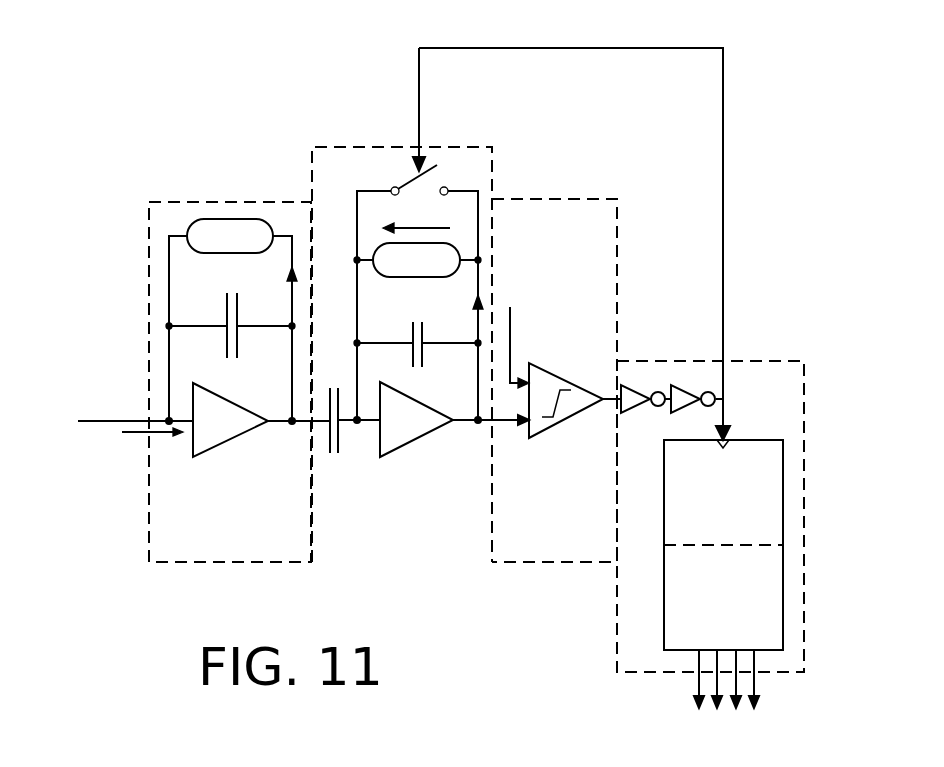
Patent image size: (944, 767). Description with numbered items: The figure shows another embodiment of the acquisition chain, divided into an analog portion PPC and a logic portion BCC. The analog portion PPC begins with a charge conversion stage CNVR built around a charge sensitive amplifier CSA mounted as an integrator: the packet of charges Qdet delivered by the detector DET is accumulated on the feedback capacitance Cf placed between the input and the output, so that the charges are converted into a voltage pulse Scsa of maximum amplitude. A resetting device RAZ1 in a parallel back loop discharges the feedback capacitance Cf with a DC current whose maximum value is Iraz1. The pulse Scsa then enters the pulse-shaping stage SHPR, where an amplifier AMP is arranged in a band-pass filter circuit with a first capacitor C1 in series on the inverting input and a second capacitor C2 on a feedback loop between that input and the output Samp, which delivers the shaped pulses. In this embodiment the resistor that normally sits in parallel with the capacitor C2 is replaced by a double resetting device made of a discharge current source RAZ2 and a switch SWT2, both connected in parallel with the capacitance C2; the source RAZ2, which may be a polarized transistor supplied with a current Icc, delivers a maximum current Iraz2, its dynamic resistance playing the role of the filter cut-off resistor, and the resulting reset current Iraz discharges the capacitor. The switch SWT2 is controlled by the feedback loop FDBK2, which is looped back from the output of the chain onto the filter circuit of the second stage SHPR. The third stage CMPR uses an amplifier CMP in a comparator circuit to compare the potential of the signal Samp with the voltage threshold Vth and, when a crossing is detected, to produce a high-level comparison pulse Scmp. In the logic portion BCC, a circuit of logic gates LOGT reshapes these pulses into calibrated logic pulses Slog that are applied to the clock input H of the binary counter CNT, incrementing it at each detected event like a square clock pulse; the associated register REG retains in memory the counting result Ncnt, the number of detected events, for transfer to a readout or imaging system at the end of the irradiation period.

The detector DET is at (98, 405).
The packet of charges Qdet is at (152, 445).
The charge conversion stage CNVR is at (230, 382).
The charge sensitive amplifier CSA is at (223, 422).
The output signal of the CSA amplifier Scsa is at (281, 435).
The resetting device RAZ1 is at (230, 320).
The maximum resetting current Iraz1 is at (263, 278).
The feedback capacitance Cf is at (237, 340).
The pulse-shaping stage SHPR is at (402, 354).
The first capacitor C1 is at (338, 435).
The amplifier AMP is at (405, 423).
The output signal of the AMP amplifier Samp is at (476, 436).
The switch SWT2 is at (413, 178).
The constant current Icc is at (459, 176).
The maximum current of the RAZ2 source Iraz2 is at (416, 218).
The discharge current source RAZ2 is at (417, 260).
The second capacitor C2 is at (422, 355).
The reset current Iraz is at (455, 301).
The threshold crossing detection stage CMPR is at (554, 380).
The voltage threshold Vth is at (513, 336).
The comparator amplifier CMP is at (545, 376).
The comparison signal Scmp is at (598, 426).
The logic portion BCC is at (617, 618).
The logic gate circuit LOGT is at (681, 398).
The logic output signal Slog is at (723, 413).
The binary counter CNT is at (723, 545).
The clock input H is at (730, 461).
The register REG is at (723, 579).
The counting result Ncnt is at (721, 704).
The feedback loop FDBK2 is at (685, 237).
The analog portion PPC is at (149, 530).